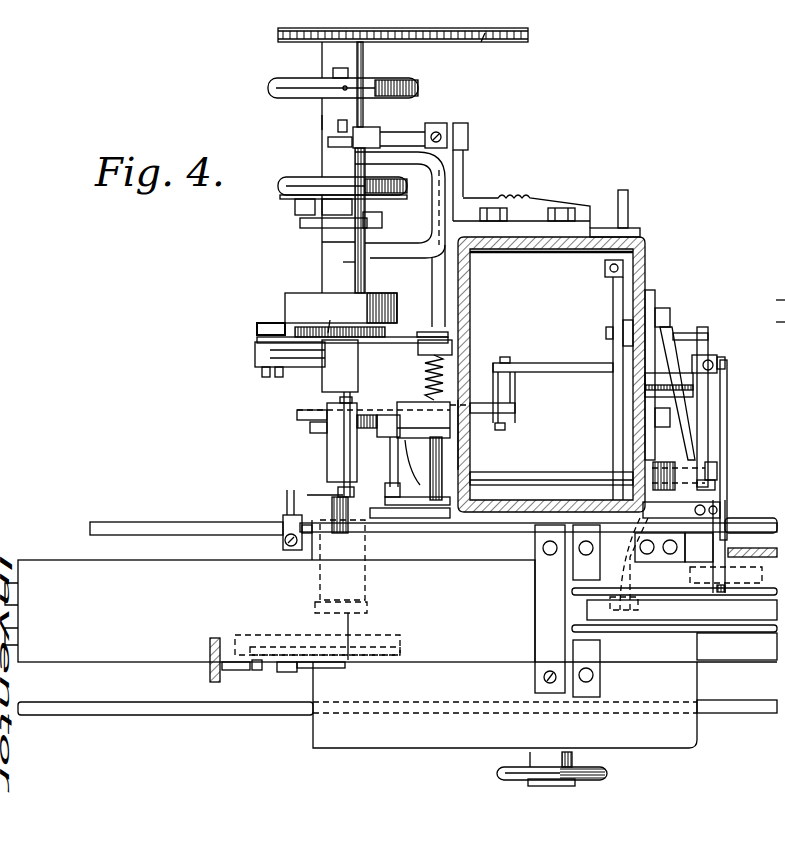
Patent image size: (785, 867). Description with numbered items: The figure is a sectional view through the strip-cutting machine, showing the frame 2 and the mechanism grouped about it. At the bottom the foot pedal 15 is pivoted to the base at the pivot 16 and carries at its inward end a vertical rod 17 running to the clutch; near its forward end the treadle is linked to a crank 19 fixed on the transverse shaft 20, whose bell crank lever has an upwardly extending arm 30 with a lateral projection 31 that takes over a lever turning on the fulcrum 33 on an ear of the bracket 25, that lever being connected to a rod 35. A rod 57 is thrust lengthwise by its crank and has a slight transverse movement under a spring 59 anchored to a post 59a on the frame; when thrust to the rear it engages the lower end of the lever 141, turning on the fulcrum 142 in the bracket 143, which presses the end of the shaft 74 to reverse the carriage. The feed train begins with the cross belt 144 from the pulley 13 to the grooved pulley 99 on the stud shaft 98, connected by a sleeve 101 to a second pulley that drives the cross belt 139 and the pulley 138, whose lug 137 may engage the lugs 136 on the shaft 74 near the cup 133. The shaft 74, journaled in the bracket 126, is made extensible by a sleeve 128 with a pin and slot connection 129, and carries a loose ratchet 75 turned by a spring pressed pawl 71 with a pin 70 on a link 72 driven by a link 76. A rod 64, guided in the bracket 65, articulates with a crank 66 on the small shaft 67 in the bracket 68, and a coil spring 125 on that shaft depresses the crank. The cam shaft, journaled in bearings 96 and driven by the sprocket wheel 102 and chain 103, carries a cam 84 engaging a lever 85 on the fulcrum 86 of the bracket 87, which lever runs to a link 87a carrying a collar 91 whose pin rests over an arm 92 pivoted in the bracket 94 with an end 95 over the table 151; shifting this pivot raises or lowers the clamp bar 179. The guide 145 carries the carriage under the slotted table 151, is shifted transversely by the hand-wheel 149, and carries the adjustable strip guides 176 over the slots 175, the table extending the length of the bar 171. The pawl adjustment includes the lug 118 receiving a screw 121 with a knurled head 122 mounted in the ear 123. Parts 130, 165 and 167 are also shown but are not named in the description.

The frame 2 is at (471, 282).
The pulley 13 is at (267, 12).
The foot pedal 15 is at (613, 297).
The pivot 16 is at (606, 332).
The vertical rod 17 is at (605, 268).
The crank 19 is at (629, 564).
The shaft 20 is at (582, 472).
The bracket 25 is at (650, 332).
The upwardly extending arm 30 is at (708, 450).
The laterally extending projection 31 is at (715, 485).
The fulcrum 33 is at (700, 389).
The rod 35 is at (720, 508).
The rod 57 is at (445, 283).
The spring 59 is at (530, 200).
The post 59a is at (628, 209).
The rod 64 is at (375, 430).
The bracket 65 is at (466, 440).
The crank 66 is at (418, 428).
The small shaft 67 is at (397, 477).
The bracket 68 is at (430, 350).
The pin 70 is at (308, 330).
The spring pressed pawl 71 is at (257, 331).
The link 72 is at (326, 370).
The shaft 74 is at (340, 399).
The ratchet 75 is at (334, 318).
The link 76 is at (290, 370).
The second cam 84 is at (300, 414).
The lever 85 is at (555, 363).
The fulcrum 86 is at (507, 435).
The bracket 87 is at (515, 409).
The link 87a is at (712, 358).
The adjustably mounted collar 91 is at (725, 362).
The arm 92 is at (727, 411).
The bracket 94 is at (693, 556).
The end 95 is at (720, 590).
The bearings 96 is at (322, 121).
The stud shaft 98 is at (339, 63).
The grooved pulley 99 is at (395, 79).
The sleeve 101 is at (363, 103).
The sprocket wheel 102 is at (278, 36).
The chain 103 is at (481, 42).
The lug 118 is at (284, 672).
The screw 121 is at (257, 670).
The knurled head 122 is at (210, 668).
The ear 123 is at (240, 671).
The coil spring 125 is at (425, 372).
The bracket 126 is at (322, 62).
The sleeve 128 is at (327, 446).
The pin and slot connection 129 is at (766, 322).
The rod 130 is at (342, 533).
The cup 133 is at (285, 306).
The lugs 136 is at (305, 228).
The lug 137 is at (300, 205).
The pulley 138 is at (292, 198).
The cross belt 139 is at (278, 184).
The lever 141 is at (338, 127).
The fulcrum 142 is at (405, 131).
The bracket 143 is at (481, 134).
The cross belt 144 is at (270, 92).
The guide 145 is at (545, 705).
The hand-wheel 149 is at (603, 779).
The table 151 is at (270, 611).
The bar 165 is at (195, 532).
The pivot 167 is at (288, 502).
The bar 171 is at (140, 716).
The slots 175 is at (648, 585).
The strip guides 176 is at (565, 571).
The bar 179 is at (766, 302).